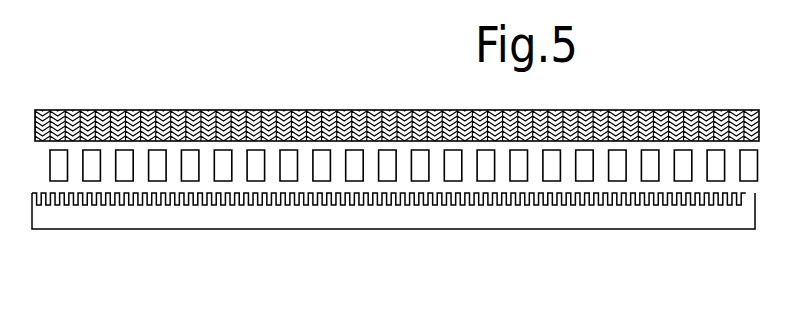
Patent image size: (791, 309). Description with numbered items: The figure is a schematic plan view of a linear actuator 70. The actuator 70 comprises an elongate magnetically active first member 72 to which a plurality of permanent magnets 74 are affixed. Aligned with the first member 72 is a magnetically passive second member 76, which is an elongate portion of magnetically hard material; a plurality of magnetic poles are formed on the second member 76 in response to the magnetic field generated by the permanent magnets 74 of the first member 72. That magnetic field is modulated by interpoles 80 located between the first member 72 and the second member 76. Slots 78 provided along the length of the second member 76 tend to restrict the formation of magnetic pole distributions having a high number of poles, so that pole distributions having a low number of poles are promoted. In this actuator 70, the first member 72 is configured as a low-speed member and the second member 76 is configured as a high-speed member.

The actuator 70 is at (100, 92).
The first member 72 is at (270, 103).
The permanent magnets 74 is at (407, 110).
The second member 76 is at (590, 217).
The slots 78 is at (323, 202).
The interpoles 80 is at (747, 175).